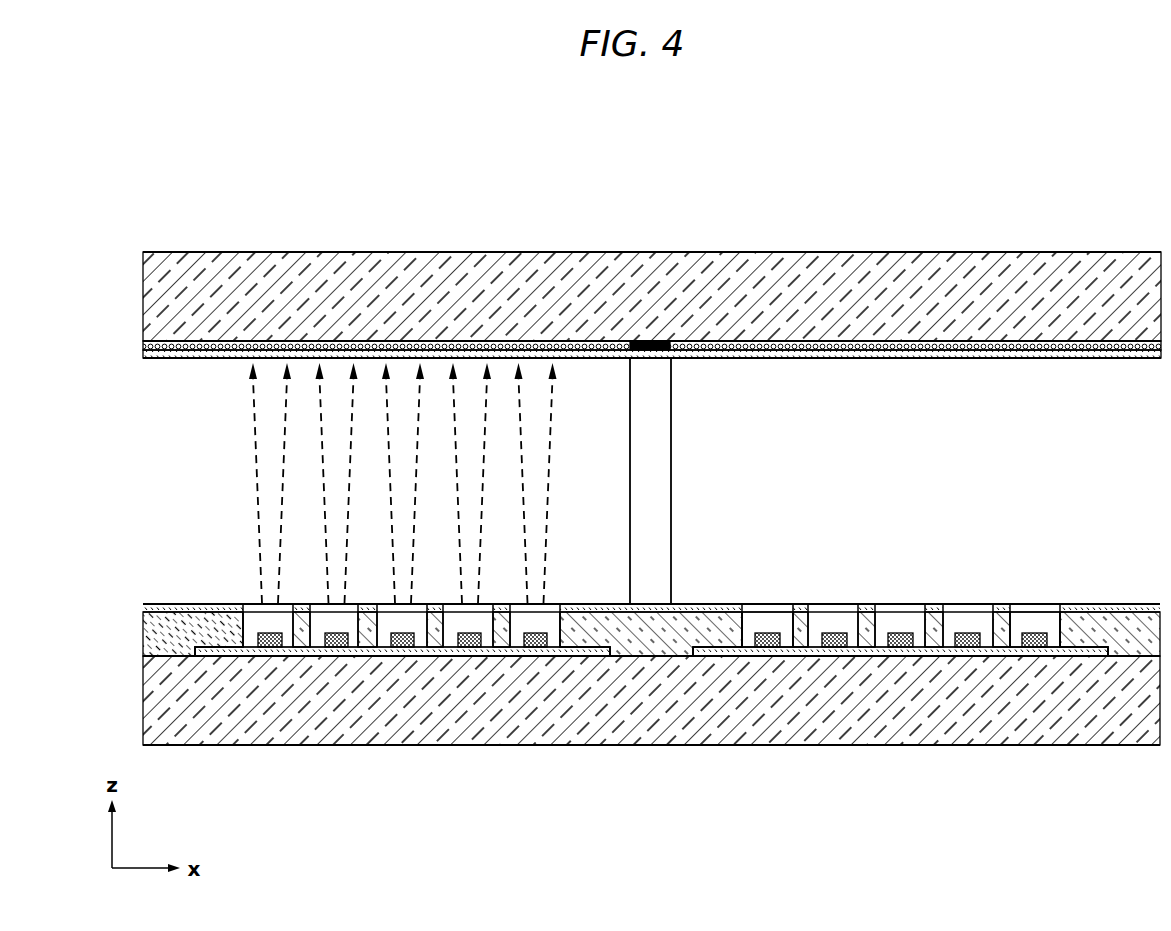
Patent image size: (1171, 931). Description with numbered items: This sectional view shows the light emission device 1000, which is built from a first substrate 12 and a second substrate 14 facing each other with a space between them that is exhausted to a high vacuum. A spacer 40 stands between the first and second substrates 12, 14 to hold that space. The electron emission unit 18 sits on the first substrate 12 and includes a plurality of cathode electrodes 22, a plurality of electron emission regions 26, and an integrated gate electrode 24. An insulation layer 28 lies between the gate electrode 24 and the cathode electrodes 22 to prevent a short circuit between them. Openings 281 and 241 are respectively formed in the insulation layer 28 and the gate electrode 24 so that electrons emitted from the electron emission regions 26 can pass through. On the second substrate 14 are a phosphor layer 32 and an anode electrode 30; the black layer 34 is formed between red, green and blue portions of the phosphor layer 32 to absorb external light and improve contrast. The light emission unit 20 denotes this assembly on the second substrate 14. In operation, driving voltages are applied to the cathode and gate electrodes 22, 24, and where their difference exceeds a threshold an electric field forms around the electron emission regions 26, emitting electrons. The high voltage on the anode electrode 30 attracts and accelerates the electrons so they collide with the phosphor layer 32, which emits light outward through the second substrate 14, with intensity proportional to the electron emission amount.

The light emission device 1000 is at (566, 174).
The first substrate 12 is at (1000, 726).
The second substrate 14 is at (250, 266).
The electron emission unit 18 is at (935, 572).
The light emission unit 20 is at (874, 372).
The cathode electrode 22 is at (307, 653).
The gate electrode 24 is at (588, 604).
The opening of gate electrode 241 is at (773, 604).
The electron emission region 26 is at (833, 633).
The insulation layer 28 is at (1124, 633).
The opening of insulation layer 281 is at (1034, 623).
The anode electrode 30 is at (408, 343).
The phosphor layer 32 is at (458, 356).
The black layer 34 is at (652, 342).
The spacer 40 is at (672, 437).